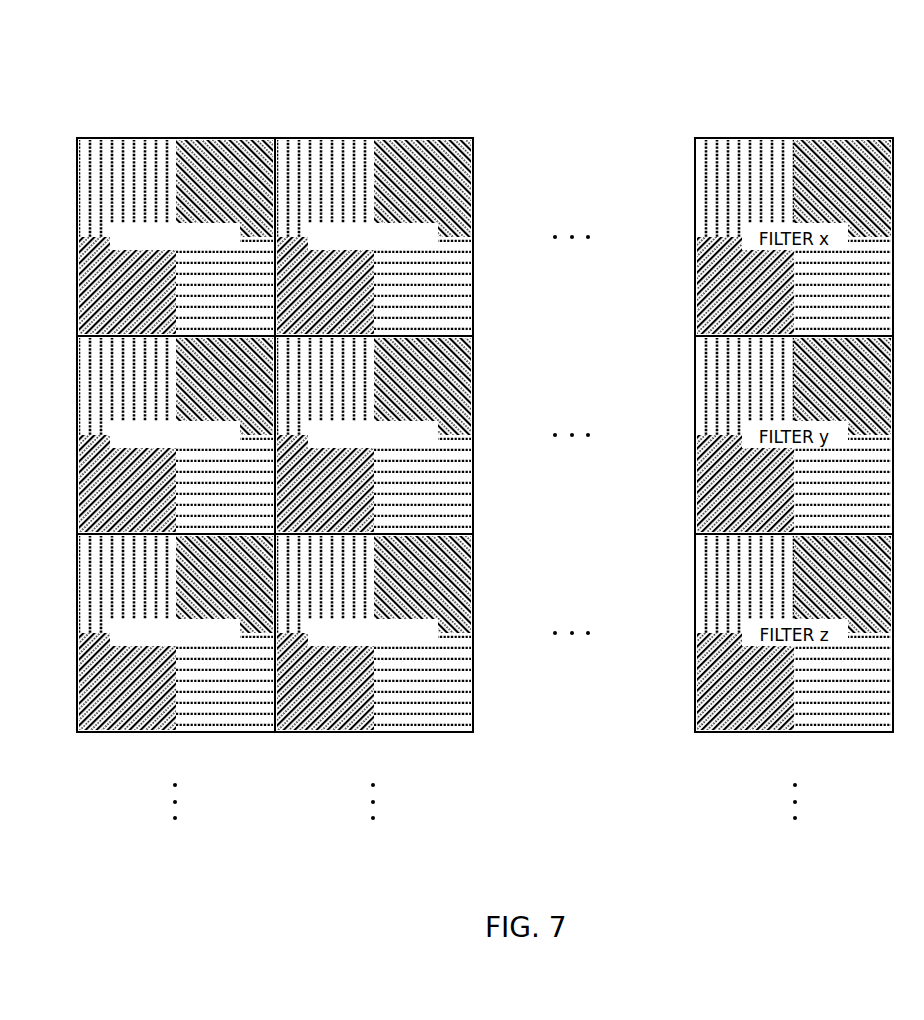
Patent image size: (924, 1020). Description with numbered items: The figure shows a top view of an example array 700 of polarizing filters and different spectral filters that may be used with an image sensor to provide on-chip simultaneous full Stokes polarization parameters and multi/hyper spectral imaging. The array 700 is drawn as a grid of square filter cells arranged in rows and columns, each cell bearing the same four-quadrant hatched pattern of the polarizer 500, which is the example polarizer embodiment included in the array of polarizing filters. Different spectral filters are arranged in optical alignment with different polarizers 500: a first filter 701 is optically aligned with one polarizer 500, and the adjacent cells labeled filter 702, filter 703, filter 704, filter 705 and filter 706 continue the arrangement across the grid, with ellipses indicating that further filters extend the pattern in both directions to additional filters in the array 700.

The array 700 is at (86, 65).
The polarizer 500 is at (176, 220).
The first filter 701 is at (122, 125).
The filter 702 is at (374, 237).
The filter 703 is at (176, 435).
The filter 704 is at (374, 435).
The filter 705 is at (176, 633).
The filter 706 is at (374, 633).